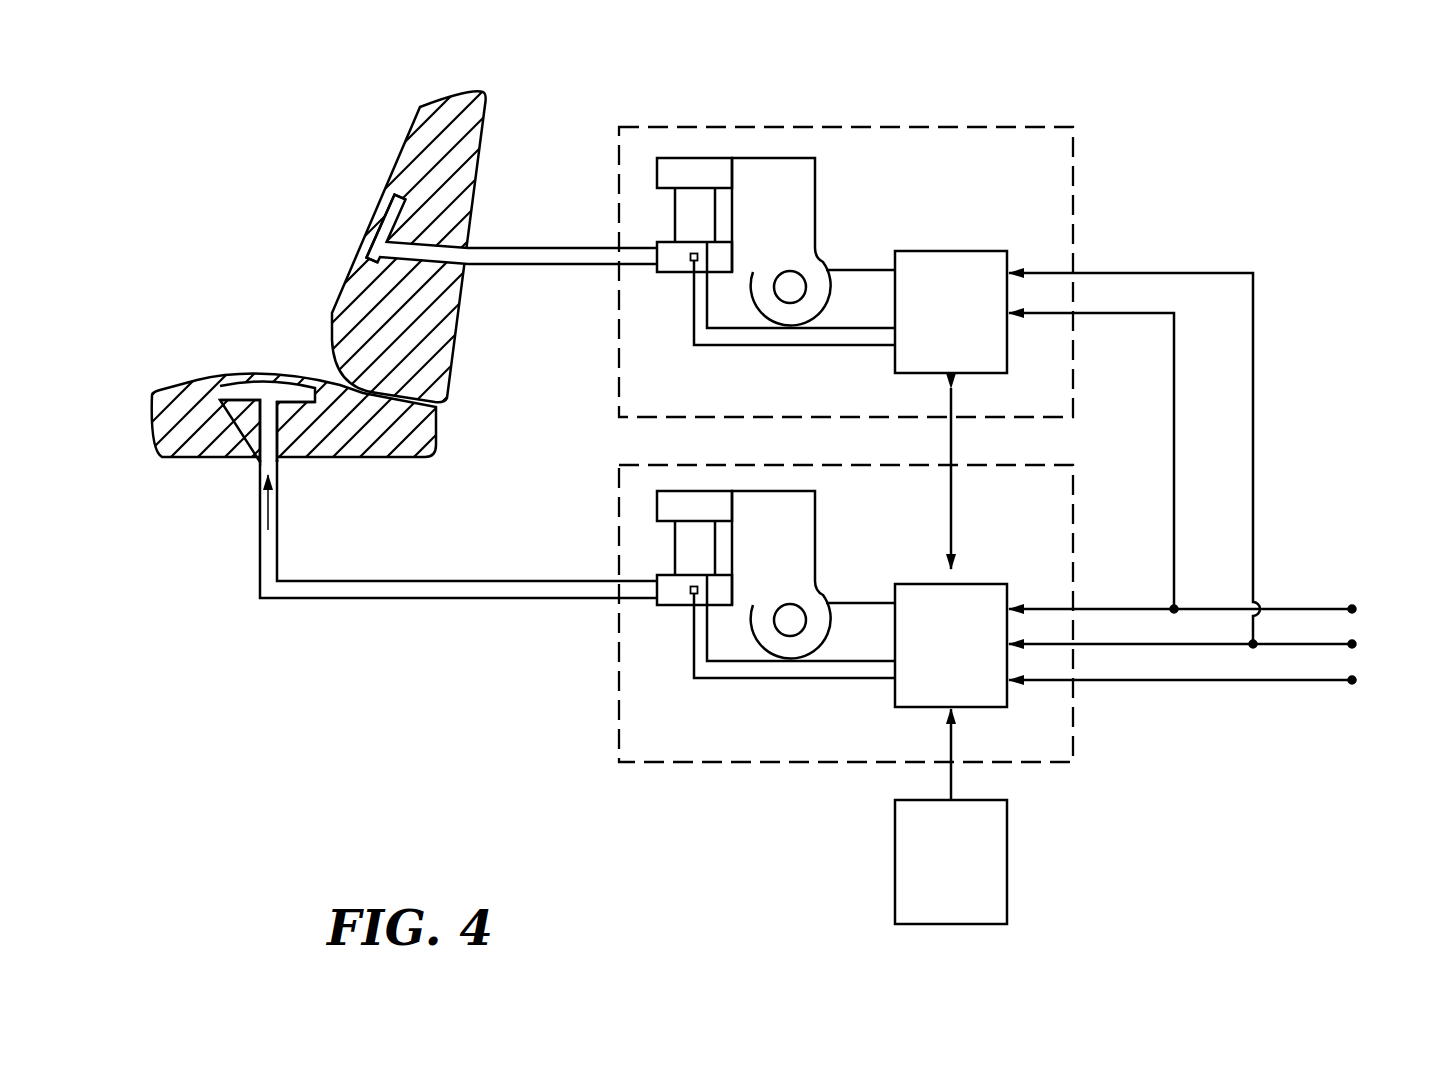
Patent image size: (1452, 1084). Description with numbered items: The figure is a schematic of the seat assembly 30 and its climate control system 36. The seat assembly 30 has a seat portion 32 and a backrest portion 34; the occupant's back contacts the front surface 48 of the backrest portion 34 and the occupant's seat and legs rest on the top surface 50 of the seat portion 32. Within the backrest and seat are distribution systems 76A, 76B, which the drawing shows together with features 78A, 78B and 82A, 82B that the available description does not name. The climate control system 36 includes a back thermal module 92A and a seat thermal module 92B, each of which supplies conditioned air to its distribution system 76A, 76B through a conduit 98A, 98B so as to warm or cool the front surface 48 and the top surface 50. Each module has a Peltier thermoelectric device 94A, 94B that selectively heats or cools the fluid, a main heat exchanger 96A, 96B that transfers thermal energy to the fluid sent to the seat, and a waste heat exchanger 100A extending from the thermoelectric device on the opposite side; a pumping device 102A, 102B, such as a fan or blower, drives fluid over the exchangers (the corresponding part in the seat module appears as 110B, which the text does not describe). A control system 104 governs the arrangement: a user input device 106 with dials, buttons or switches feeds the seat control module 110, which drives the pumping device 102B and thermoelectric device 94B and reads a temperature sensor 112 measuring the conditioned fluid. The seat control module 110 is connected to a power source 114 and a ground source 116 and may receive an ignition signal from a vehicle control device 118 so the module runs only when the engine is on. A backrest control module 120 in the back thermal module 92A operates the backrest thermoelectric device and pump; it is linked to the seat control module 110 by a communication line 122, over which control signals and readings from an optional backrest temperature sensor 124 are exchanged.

The seat assembly 30 is at (272, 259).
The seat portion 32 is at (220, 364).
The backrest portion 34 is at (406, 124).
The climate control system 36 is at (1030, 112).
The front surface 48 is at (402, 149).
The top surface 50 is at (180, 386).
The distribution system 76A is at (358, 222).
The distribution system 76B is at (257, 361).
The seat back foam pad 78A is at (437, 235).
The seat bottom foam pad 78B is at (220, 455).
The seat back air channel 82A is at (389, 222).
The seat bottom air channel 82B is at (271, 391).
The back thermal module 92A is at (831, 125).
The seat thermal module 92B is at (693, 764).
The thermoelectric device 94A is at (674, 207).
The thermoelectric device 94B is at (674, 540).
The main heat exchanger 96A is at (659, 273).
The main heat exchanger 96B is at (659, 606).
The conduit 98A is at (560, 266).
The conduit 98B is at (470, 580).
The waste heat exchanger 100A is at (705, 157).
The pumping device 102A is at (823, 262).
The pumping device 102B is at (823, 594).
The control system 104 is at (1045, 772).
The user input device 106 is at (929, 875).
The seat control module 110 is at (929, 650).
The second pump 110B is at (697, 490).
The temperature sensor 112 is at (691, 595).
The power source 114 is at (1353, 606).
The ground source 116 is at (1353, 641).
The vehicle control device 118 is at (1353, 680).
The backrest control module 120 is at (929, 311).
The communication line 122 is at (953, 447).
The backrest temperature sensor 124 is at (691, 262).